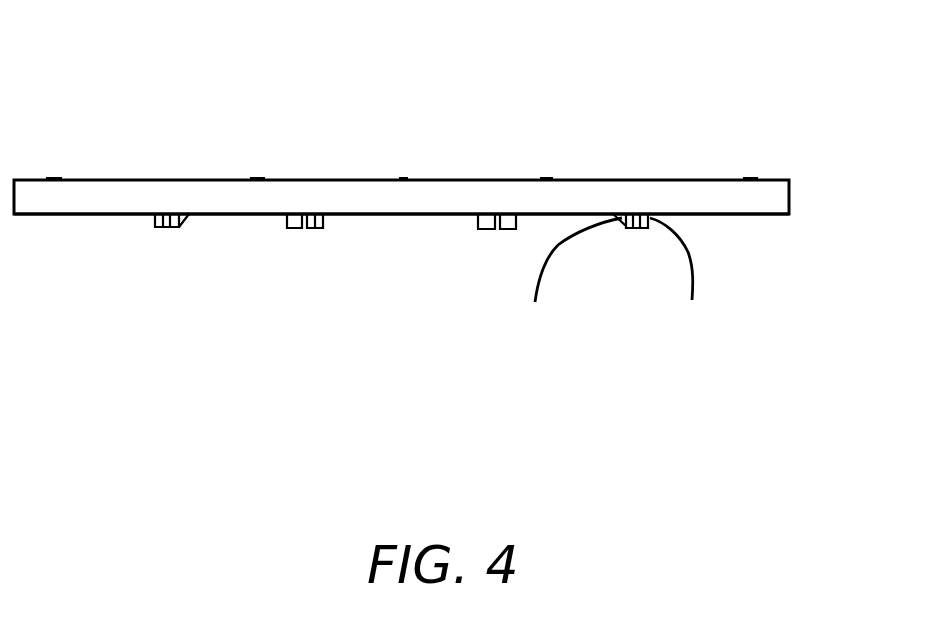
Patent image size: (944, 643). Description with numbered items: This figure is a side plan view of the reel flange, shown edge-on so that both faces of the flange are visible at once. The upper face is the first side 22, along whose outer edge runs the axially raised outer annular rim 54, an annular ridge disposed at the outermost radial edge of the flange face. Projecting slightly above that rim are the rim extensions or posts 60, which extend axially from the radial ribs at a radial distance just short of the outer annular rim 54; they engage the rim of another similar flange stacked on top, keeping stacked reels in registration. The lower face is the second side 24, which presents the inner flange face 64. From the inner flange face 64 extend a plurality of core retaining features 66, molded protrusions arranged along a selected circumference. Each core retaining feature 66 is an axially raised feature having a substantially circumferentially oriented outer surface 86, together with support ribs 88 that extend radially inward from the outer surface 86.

The first side 22 is at (518, 130).
The second side 24 is at (441, 275).
The outer annular rim 54 is at (790, 195).
The rim extensions or posts 60 is at (53, 177).
The inner flange face 64 is at (87, 216).
The core retaining features 66 is at (178, 230).
The outer surface 86 is at (680, 281).
The support ribs 88 is at (572, 281).